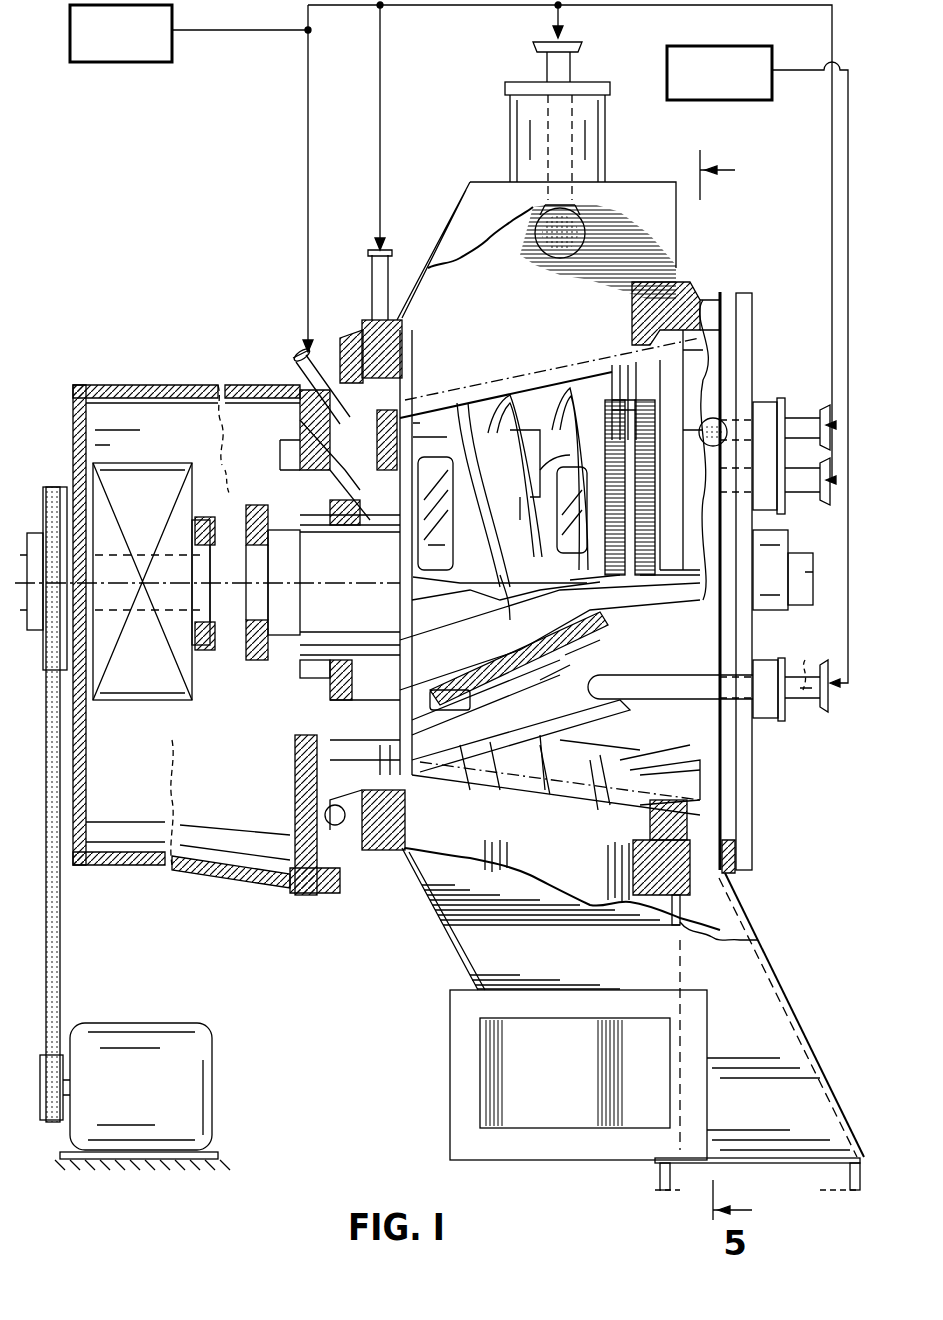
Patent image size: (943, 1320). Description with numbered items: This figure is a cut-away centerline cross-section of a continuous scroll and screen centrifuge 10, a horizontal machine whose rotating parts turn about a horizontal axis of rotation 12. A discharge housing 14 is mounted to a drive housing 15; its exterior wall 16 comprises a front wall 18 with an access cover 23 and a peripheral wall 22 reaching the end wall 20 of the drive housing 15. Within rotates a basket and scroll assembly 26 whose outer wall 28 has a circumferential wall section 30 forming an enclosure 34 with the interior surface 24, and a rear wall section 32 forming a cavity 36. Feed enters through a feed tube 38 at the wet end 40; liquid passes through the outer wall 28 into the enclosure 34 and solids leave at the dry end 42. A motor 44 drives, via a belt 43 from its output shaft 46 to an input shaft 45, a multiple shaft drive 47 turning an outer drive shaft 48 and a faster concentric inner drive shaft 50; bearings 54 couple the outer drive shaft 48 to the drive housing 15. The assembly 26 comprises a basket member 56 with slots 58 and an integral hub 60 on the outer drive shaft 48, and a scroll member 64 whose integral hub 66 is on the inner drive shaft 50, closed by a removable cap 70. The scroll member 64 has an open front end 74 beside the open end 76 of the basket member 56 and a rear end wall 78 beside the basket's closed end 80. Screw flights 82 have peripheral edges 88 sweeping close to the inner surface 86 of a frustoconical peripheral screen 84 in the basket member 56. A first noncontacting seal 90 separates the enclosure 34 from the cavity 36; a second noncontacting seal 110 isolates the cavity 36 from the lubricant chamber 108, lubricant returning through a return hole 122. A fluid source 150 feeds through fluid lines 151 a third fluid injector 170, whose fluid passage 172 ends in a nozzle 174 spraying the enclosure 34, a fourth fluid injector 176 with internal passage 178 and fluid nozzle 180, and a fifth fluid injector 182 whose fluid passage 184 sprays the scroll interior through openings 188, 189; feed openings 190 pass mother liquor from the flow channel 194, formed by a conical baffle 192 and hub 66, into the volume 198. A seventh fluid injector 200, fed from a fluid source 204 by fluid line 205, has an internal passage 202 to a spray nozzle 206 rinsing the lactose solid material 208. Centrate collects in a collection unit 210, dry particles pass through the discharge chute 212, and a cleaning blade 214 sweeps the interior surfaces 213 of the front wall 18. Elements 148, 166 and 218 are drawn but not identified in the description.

The continuous scroll and screen centrifuge 10 is at (755, 216).
The axis of rotation 12 is at (179, 583).
The discharge housing 14 is at (666, 182).
The drive housing 15 is at (154, 383).
The exterior wall 16 is at (480, 222).
The front wall 18 is at (690, 262).
The end wall 20 is at (298, 430).
The peripheral wall 22 is at (428, 283).
The cover 23 is at (755, 325).
The interior surface 24 is at (420, 309).
The basket and scroll assembly 26 is at (545, 362).
The outer wall 28 is at (640, 402).
The circumferential wall section 30 is at (430, 405).
The rear wall section 32 is at (350, 690).
The enclosure 34 is at (552, 306).
The cavity 36 is at (300, 716).
The feed tube 38 is at (645, 605).
The wet end 40 is at (440, 790).
The dry end 42 is at (690, 798).
The belt 43 is at (62, 955).
The motor 44 is at (203, 1052).
The input shaft 45 is at (105, 535).
The output shaft 46 is at (68, 1082).
The multiple shaft drive 47 is at (163, 465).
The outer drive shaft 48 is at (245, 528).
The inner drive shaft 50 is at (255, 640).
The bearings 54 is at (315, 545).
The basket member 56 is at (566, 800).
The slots 58 is at (618, 365).
The integral hub 60 is at (345, 640).
The scroll member 64 is at (478, 410).
The integral hub 66 is at (450, 645).
The cap 70 is at (525, 668).
The open front end 74 is at (700, 775).
The open end 76 is at (690, 805).
The rear end wall 78 is at (495, 718).
The closed end 80 is at (362, 785).
The screw flights 82 is at (596, 822).
The peripheral screen 84 is at (636, 515).
The inner surface 86 is at (575, 385).
The peripheral edge 88 is at (557, 454).
The first noncontacting seal 90 is at (408, 388).
The chamber 108 is at (255, 480).
The second noncontacting seal 110 is at (340, 530).
The return hole 122 is at (300, 695).
The pipe 148 is at (372, 273).
The fluid source 150 is at (132, 62).
The fluid lines 151 is at (355, 5).
The pipe 166 is at (280, 375).
The third fluid injector 170 is at (547, 70).
The fluid passage 172 is at (570, 70).
The nozzle 174 is at (538, 255).
The fourth fluid injector 176 is at (814, 405).
The internal passage 178 is at (795, 415).
The fluid nozzle 180 is at (712, 444).
The fifth fluid injector 182 is at (802, 525).
The fluid passage 184 is at (803, 475).
The openings 188 is at (590, 748).
The openings 189 is at (498, 565).
The feed openings 190 is at (455, 550).
The conical baffle 192 is at (568, 645).
The flow channel 194 is at (520, 668).
The volume 198 is at (478, 790).
The seventh fluid injector 200 is at (815, 705).
The internal passage 202 is at (820, 663).
The fluid source 204 is at (765, 100).
The fluid line 205 is at (805, 72).
The spray nozzle 206 is at (622, 680).
The lactose solid material 208 is at (562, 916).
The collection unit 210 is at (532, 1098).
The discharge chute 212 is at (707, 926).
The interior surfaces 213 is at (705, 310).
The cleaning blade 214 is at (732, 325).
The support 218 is at (754, 1201).